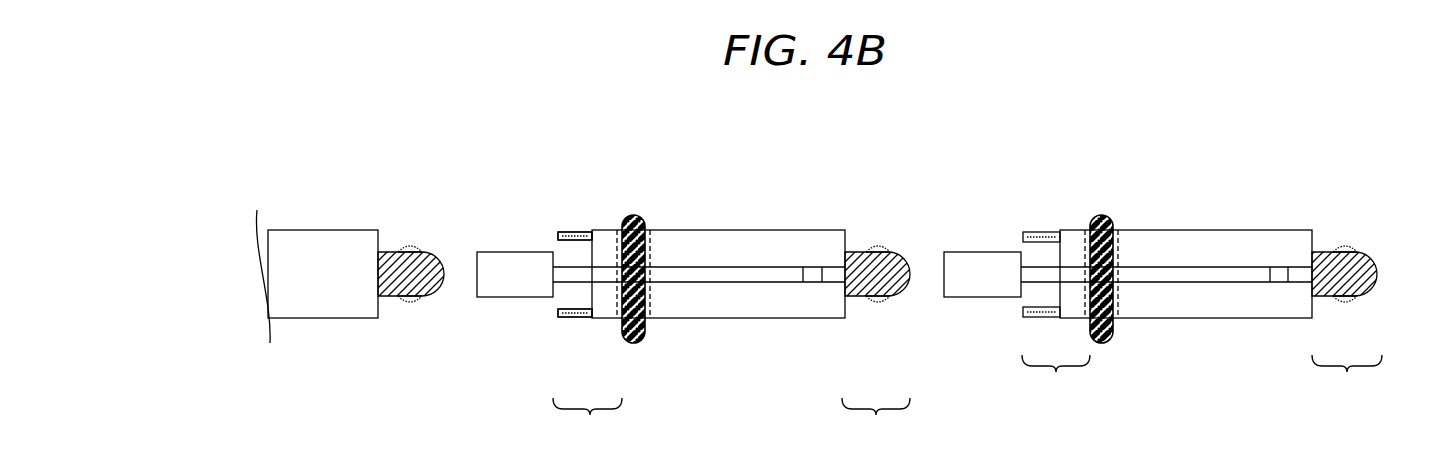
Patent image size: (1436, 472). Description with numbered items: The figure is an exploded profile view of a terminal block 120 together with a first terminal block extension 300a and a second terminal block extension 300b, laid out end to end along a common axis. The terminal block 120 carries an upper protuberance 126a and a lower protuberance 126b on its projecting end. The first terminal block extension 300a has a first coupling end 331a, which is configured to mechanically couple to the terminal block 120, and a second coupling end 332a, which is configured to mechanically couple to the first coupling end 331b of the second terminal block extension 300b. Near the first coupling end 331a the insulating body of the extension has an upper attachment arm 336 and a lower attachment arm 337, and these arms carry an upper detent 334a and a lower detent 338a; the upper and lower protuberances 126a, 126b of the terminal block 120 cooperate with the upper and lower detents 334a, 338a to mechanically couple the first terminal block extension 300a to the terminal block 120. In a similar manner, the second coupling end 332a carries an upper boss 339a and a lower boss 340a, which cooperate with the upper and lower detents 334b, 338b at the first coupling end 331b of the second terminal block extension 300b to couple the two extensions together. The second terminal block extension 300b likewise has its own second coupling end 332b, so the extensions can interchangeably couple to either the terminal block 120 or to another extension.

The terminal block 120 is at (350, 247).
The upper protuberance 126a is at (412, 243).
The lower protuberance 126b is at (410, 305).
The first terminal block extension 300a is at (693, 281).
The second terminal block extension 300b is at (1162, 258).
The upper detent 334a is at (576, 241).
The upper detent 334b is at (1043, 241).
The upper attachment arm 336 is at (577, 231).
The lower attachment arm 337 is at (572, 319).
The lower detent 338a is at (576, 308).
The lower detent 338b is at (1043, 308).
The upper boss 339a is at (878, 247).
The lower boss 340a is at (877, 302).
The first coupling end 331a is at (587, 423).
The first coupling end 331b is at (1056, 380).
The second coupling end 332a is at (876, 423).
The second coupling end 332b is at (1347, 380).